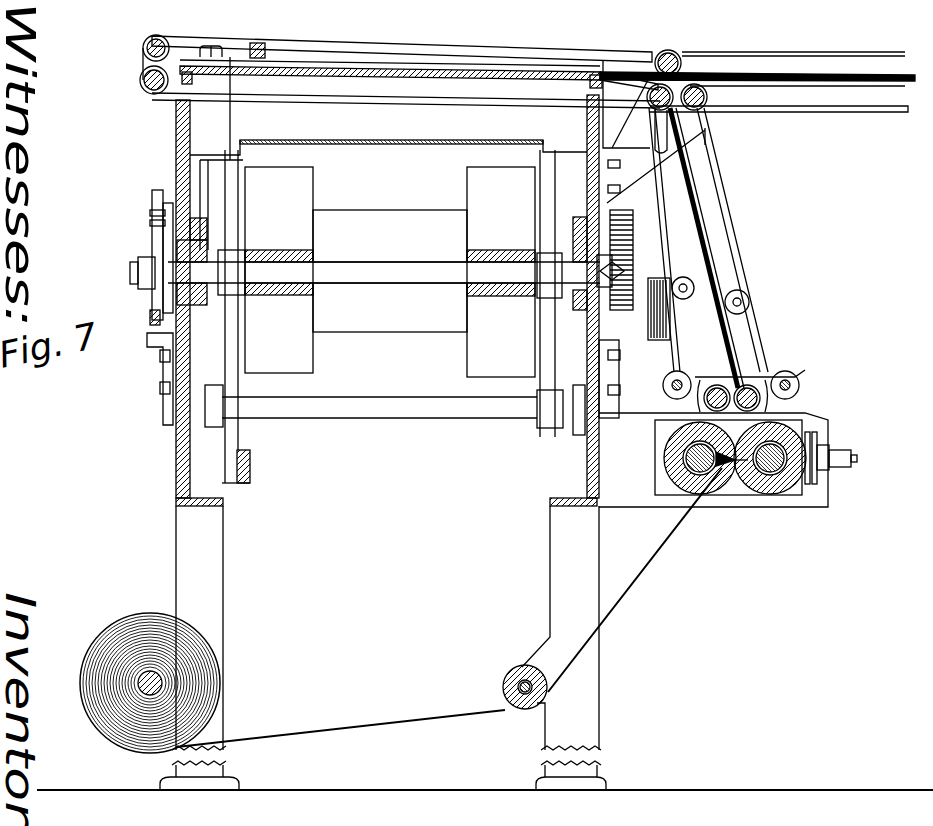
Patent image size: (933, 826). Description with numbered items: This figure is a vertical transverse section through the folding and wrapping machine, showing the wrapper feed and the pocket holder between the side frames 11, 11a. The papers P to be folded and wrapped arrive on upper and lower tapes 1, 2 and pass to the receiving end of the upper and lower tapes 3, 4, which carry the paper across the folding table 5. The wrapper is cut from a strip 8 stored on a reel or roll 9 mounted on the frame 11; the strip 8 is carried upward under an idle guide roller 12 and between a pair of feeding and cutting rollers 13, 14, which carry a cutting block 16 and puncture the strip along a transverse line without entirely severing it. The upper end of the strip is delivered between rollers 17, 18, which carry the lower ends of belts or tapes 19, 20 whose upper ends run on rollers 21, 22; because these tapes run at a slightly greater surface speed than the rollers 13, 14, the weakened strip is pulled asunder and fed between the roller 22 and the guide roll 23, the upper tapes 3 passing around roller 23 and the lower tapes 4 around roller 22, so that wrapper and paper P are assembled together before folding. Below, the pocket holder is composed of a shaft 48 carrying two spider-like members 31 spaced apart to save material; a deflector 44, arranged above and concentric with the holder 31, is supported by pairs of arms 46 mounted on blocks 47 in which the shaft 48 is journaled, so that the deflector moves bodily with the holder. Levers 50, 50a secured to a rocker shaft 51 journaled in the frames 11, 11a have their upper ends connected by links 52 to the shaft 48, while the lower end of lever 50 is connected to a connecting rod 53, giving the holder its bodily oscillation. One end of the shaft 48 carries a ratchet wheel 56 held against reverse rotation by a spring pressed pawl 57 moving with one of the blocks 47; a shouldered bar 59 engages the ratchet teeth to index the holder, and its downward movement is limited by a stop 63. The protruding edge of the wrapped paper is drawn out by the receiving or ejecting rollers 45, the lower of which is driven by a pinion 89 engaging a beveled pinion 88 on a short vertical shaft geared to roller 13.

The upper tape 1 is at (830, 138).
The lower tape 2 is at (872, 54).
The paper P is at (803, 73).
The upper tape 3 is at (232, 38).
The lower tape 4 is at (160, 95).
The folding table 5 is at (353, 72).
The wrapper strip 8 is at (218, 703).
The reel 9 is at (155, 683).
The side frame 11 is at (290, 577).
The side frame 11a is at (558, 557).
The idle guide roller 12 is at (518, 670).
The feeding and cutting roller 13 is at (685, 487).
The feeding and cutting roller 14 is at (790, 549).
The cutting block 16 is at (725, 549).
The roller 17 is at (832, 340).
The roller 18 is at (713, 400).
The belt 19 is at (790, 213).
The belt 20 is at (660, 237).
The roller 21 is at (705, 85).
The roller 22 is at (658, 84).
The guide roll 23 is at (678, 68).
The holder 31 is at (313, 252).
The deflector 44 is at (432, 142).
The receiving or ejecting roller 45 is at (395, 232).
The arm 46 is at (200, 195).
The block 47 is at (180, 285).
The holder shaft 48 is at (425, 275).
The lever 50 is at (230, 380).
The lever 50a is at (547, 357).
The rocker shaft 51 is at (430, 422).
The link 52 is at (232, 256).
The connecting rod 53 is at (250, 475).
The ratchet wheel 56 is at (160, 245).
The pawl 57 is at (160, 193).
The bar 59 is at (150, 322).
The stop 63 is at (155, 333).
The beveled pinion 88 is at (750, 302).
The pinion 89 is at (662, 293).